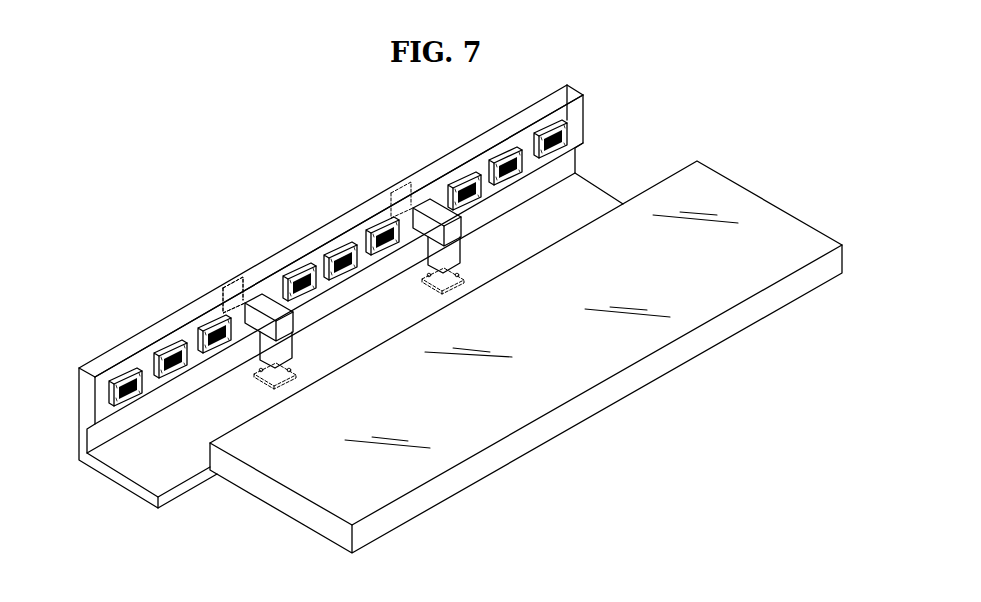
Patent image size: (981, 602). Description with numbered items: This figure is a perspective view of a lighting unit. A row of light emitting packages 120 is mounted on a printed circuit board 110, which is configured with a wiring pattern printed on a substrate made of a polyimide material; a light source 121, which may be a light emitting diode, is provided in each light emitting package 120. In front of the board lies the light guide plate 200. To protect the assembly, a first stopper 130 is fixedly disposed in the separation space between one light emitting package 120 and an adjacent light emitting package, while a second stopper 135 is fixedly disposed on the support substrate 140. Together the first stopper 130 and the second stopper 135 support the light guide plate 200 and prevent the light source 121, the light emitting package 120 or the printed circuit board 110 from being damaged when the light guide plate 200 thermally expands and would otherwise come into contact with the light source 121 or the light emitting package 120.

The printed circuit board 110 is at (188, 333).
The light emitting package 120 is at (130, 372).
The light source 121 is at (78, 423).
The first stopper 130 is at (268, 291).
The second stopper 135 is at (247, 282).
The support substrate 140 is at (330, 228).
The light guide plate 200 is at (659, 190).